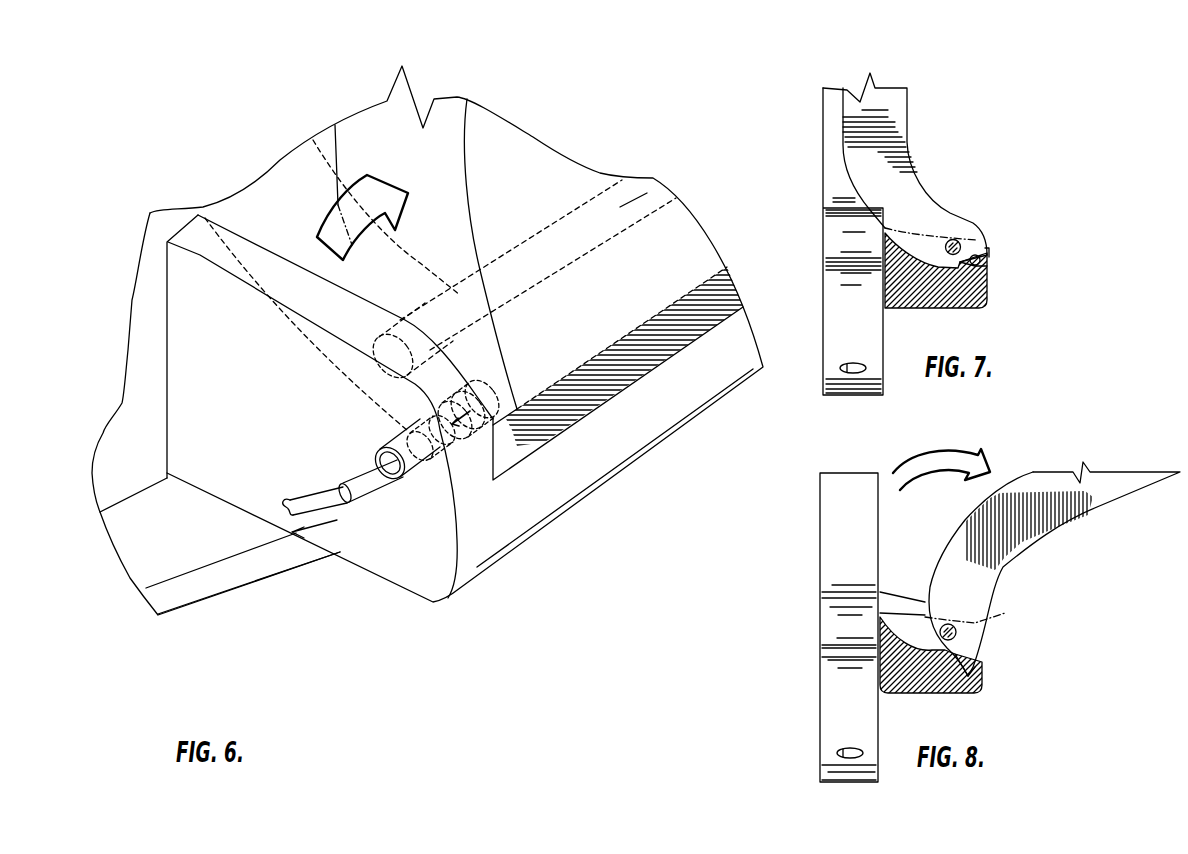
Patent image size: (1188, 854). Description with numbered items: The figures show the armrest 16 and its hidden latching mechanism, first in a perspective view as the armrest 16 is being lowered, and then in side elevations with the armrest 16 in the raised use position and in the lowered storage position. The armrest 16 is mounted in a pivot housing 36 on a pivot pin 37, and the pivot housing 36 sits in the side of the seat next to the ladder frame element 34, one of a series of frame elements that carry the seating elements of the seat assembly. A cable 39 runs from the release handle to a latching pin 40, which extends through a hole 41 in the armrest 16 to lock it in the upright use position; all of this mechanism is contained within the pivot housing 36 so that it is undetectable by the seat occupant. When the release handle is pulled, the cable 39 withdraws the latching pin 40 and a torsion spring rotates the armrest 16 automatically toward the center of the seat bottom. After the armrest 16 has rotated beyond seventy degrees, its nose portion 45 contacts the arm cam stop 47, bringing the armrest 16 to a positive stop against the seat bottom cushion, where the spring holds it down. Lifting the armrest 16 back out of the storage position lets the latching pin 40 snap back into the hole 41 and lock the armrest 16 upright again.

In FIG. 6, the armrest 16 is at (280, 213).
In FIG. 7, the armrest 16 is at (885, 103).
In FIG. 8, the armrest 16 is at (1050, 487).
In FIG. 6, the ladder frame element 34 is at (182, 547).
In FIG. 7, the ladder frame element 34 is at (842, 313).
In FIG. 8, the ladder frame element 34 is at (847, 714).
In FIG. 6, the pivot housing 36 is at (613, 438).
In FIG. 7, the pivot housing 36 is at (985, 283).
In FIG. 8, the pivot housing 36 is at (957, 683).
In FIG. 6, the pivot pin 37 is at (650, 178).
In FIG. 6, the cable 39 is at (317, 512).
In FIG. 6, the latching pin 40 is at (485, 405).
In FIG. 7, the latching pin 40 is at (990, 252).
In FIG. 7, the hole 41 is at (963, 238).
In FIG. 7, the nose portion 45 is at (987, 253).
In FIG. 8, the nose portion 45 is at (970, 673).
In FIG. 7, the arm cam stop 47 is at (988, 266).
In FIG. 8, the arm cam stop 47 is at (953, 660).